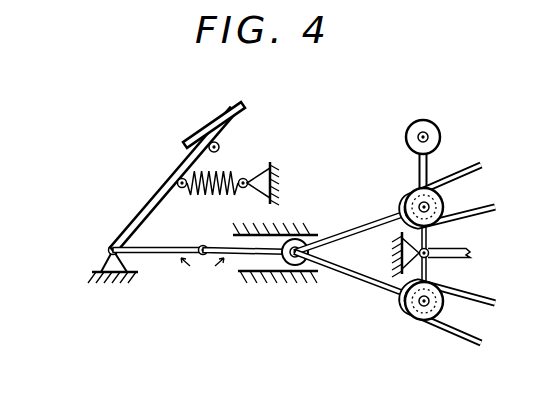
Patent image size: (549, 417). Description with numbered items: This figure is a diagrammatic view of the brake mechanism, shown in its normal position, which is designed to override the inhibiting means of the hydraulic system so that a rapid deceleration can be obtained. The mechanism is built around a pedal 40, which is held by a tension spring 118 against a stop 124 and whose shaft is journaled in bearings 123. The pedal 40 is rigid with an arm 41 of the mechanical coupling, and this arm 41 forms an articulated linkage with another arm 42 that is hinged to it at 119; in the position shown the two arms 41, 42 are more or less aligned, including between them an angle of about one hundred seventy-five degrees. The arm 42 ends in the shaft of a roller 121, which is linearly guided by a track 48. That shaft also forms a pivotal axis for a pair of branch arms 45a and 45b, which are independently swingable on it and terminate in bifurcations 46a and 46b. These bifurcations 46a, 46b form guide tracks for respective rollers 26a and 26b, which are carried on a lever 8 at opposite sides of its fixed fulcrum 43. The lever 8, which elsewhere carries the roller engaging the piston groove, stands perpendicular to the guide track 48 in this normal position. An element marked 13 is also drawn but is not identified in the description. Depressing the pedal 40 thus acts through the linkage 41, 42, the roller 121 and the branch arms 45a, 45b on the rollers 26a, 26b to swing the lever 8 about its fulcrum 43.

The lever 8 is at (432, 164).
The roller 13 is at (430, 121).
The roller 26a is at (410, 197).
The roller 26b is at (410, 319).
The pedal 40 is at (147, 204).
The arm 41 is at (157, 258).
The arm 42 is at (242, 257).
The fixed fulcrum 43 is at (432, 258).
The branch arm 45a is at (376, 197).
The branch arm 45b is at (372, 284).
The bifurcation 46a is at (486, 207).
The bifurcation 46b is at (478, 346).
The track 48 is at (263, 273).
The tension spring 118 is at (228, 177).
The hinge 119 is at (203, 245).
The roller 121 is at (299, 268).
The bearings 123 is at (108, 262).
The stop 124 is at (222, 148).